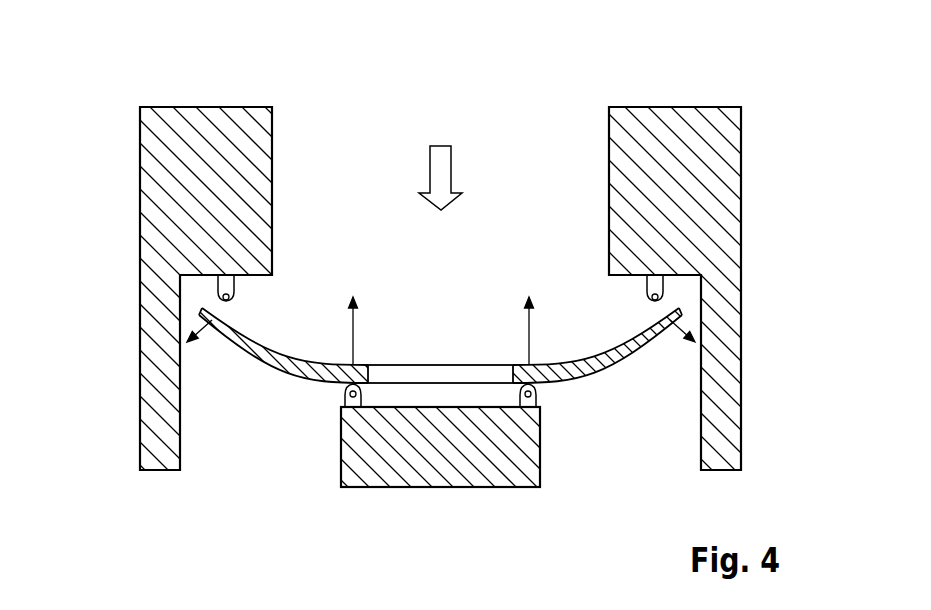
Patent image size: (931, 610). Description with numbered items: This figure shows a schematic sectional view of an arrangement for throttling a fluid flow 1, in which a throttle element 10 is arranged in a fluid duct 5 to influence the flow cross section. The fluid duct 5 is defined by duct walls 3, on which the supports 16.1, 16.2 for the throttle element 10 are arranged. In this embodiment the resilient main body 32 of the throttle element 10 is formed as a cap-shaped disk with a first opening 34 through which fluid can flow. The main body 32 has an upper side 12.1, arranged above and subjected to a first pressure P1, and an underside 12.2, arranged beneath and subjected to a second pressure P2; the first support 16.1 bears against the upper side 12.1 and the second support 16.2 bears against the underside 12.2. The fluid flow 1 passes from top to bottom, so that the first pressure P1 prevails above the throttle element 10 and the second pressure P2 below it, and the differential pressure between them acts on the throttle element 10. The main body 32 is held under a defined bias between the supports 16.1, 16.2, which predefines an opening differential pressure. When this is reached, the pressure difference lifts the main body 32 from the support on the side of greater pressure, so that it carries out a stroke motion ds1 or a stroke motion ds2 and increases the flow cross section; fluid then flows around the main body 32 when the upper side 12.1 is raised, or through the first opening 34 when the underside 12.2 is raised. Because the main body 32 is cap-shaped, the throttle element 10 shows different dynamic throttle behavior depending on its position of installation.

The fluid flow 1 is at (441, 158).
The duct walls 3 is at (157, 209).
The fluid duct 5 is at (320, 140).
The throttle element 10 is at (526, 90).
The upper side 12.1 is at (278, 330).
The underside 12.2 is at (250, 380).
The first support 16.1 is at (222, 291).
The second support 16.2 is at (347, 404).
The resilient main body 32 is at (317, 373).
The first opening 34 is at (437, 372).
The stroke motion ds1 is at (440, 345).
The stroke motion ds2 is at (441, 325).
The first pressure P1 is at (446, 313).
The second pressure P2 is at (440, 406).